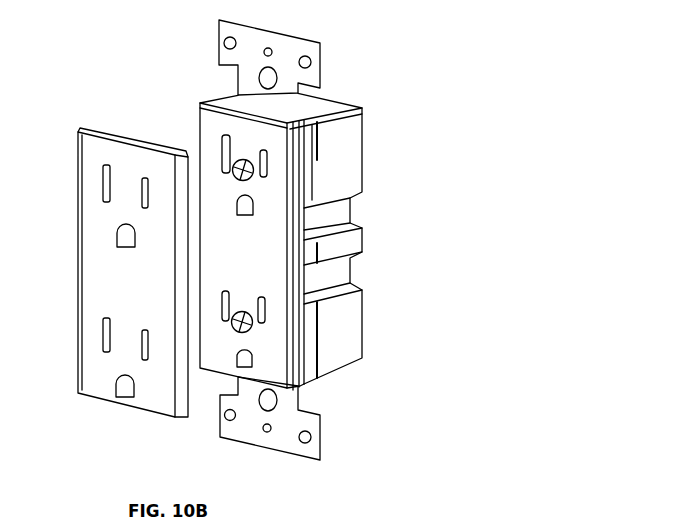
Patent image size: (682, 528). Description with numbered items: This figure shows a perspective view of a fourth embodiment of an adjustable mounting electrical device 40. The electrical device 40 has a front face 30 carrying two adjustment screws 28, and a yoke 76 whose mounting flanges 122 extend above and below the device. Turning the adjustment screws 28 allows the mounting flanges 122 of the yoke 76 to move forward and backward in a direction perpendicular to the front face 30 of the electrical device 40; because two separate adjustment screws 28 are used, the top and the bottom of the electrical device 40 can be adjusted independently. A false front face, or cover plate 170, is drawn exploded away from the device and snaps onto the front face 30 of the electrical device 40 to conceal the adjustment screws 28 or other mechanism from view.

The adjustment screws 28 is at (177, 203).
The front face 30 is at (212, 128).
The electrical device 40 is at (316, 162).
The yoke 76 is at (342, 63).
The mounting flanges 122 is at (356, 240).
The cover plate 170 is at (95, 283).